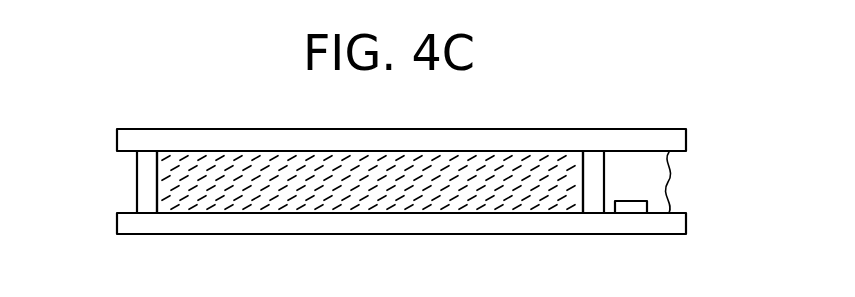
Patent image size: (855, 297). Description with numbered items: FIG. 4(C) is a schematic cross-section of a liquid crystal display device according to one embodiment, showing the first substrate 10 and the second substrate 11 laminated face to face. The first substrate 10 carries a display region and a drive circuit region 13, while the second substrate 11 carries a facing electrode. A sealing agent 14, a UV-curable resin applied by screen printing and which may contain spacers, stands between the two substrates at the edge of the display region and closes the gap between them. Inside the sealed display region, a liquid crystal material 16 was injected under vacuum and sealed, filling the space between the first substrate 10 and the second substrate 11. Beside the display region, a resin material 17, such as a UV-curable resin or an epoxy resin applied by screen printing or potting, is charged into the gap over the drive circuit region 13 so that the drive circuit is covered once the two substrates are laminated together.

The first substrate 10 is at (543, 223).
The second substrate 11 is at (568, 139).
The drive circuit region 13 is at (634, 207).
The sealing agent 14 is at (142, 175).
The liquid crystal material 16 is at (428, 203).
The resin material 17 is at (657, 172).